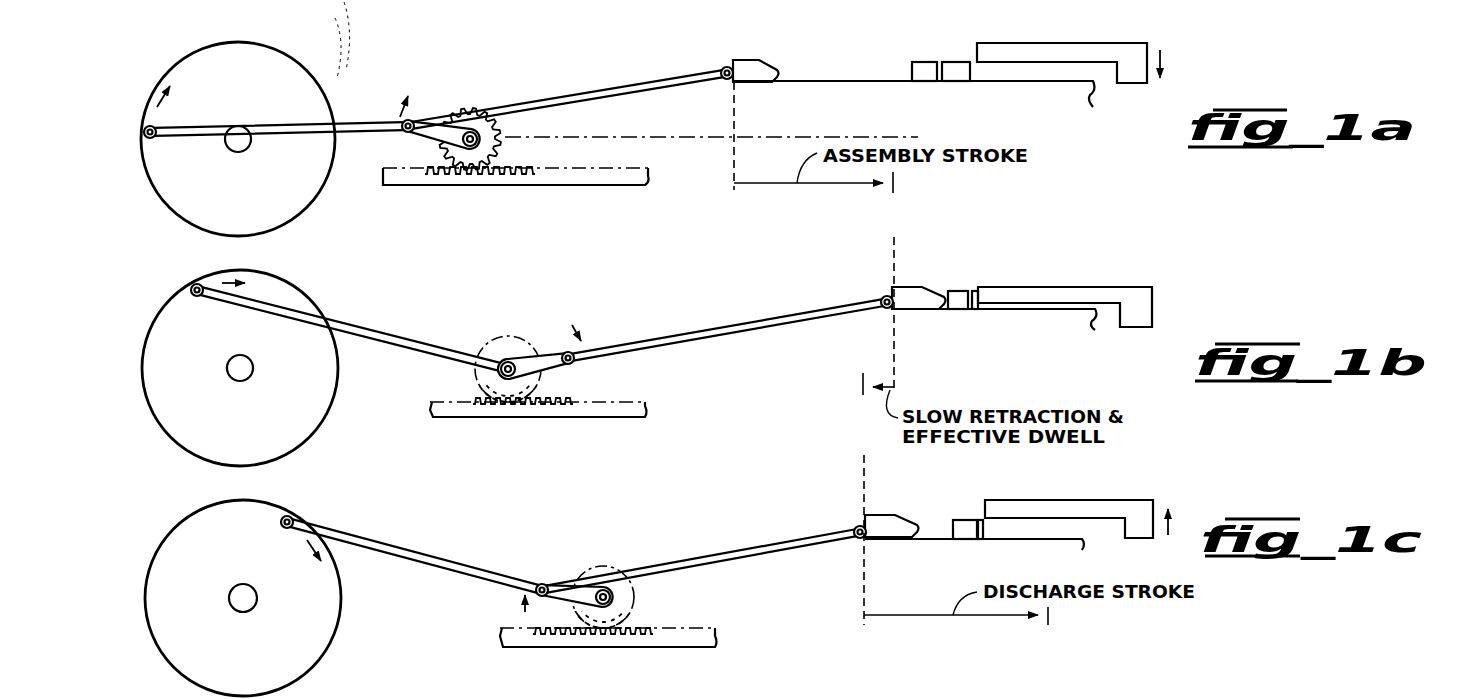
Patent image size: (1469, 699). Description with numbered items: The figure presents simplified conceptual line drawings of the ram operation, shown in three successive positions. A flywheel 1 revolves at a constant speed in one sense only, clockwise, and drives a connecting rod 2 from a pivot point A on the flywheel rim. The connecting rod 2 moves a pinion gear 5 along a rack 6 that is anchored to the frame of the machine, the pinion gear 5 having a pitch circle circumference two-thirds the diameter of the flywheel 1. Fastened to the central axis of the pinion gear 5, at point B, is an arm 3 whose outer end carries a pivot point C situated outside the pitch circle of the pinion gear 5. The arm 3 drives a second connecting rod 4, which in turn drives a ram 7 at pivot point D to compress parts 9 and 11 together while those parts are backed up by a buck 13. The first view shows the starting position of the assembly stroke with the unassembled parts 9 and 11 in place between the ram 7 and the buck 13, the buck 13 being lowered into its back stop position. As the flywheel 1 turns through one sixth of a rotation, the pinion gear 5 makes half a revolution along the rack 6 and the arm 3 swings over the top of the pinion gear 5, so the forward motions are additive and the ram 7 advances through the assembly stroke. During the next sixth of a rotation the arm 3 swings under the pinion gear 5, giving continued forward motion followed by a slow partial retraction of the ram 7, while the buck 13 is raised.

In FIG. 1A, the flywheel 1 is at (295, 72).
In FIG. 1B, the flywheel 1 is at (300, 302).
In FIG. 1C, the flywheel 1 is at (332, 610).
In FIG. 1A, the connecting rod 2 is at (278, 128).
In FIG. 1B, the connecting rod 2 is at (350, 326).
In FIG. 1C, the connecting rod 2 is at (400, 542).
In FIG. 1A, the arm 3 is at (445, 128).
In FIG. 1B, the arm 3 is at (548, 350).
In FIG. 1C, the arm 3 is at (568, 590).
In FIG. 1A, the second connecting rod 4 is at (565, 100).
In FIG. 1B, the second connecting rod 4 is at (712, 295).
In FIG. 1C, the second connecting rod 4 is at (715, 555).
In FIG. 1A, the pinion gear 5 is at (498, 148).
In FIG. 1B, the pinion gear 5 is at (480, 388).
In FIG. 1C, the pinion gear 5 is at (598, 620).
In FIG. 1A, the rack 6 is at (495, 177).
In FIG. 1B, the rack 6 is at (508, 408).
In FIG. 1C, the rack 6 is at (630, 637).
In FIG. 1A, the ram 7 is at (757, 58).
In FIG. 1B, the ram 7 is at (912, 287).
In FIG. 1C, the ram 7 is at (890, 515).
In FIG. 1A, the part 9 is at (925, 62).
In FIG. 1B, the part 9 is at (958, 291).
In FIG. 1C, the part 9 is at (960, 520).
In FIG. 1A, the part 11 is at (957, 62).
In FIG. 1B, the part 11 is at (975, 291).
In FIG. 1C, the part 11 is at (980, 520).
In FIG. 1A, the buck 13 is at (1040, 43).
In FIG. 1B, the buck 13 is at (1038, 290).
In FIG. 1C, the buck 13 is at (1040, 505).
In FIG. 1A, the pivot point A is at (150, 128).
In FIG. 1B, the pivot point A is at (194, 287).
In FIG. 1C, the pivot point A is at (295, 510).
In FIG. 1A, the pivot point B is at (505, 126).
In FIG. 1B, the pivot point B is at (505, 358).
In FIG. 1C, the pivot point B is at (618, 598).
In FIG. 1A, the pivot point C is at (404, 132).
In FIG. 1B, the pivot point C is at (575, 365).
In FIG. 1C, the pivot point C is at (540, 582).
In FIG. 1A, the pivot point D is at (724, 70).
In FIG. 1B, the pivot point D is at (880, 297).
In FIG. 1C, the pivot point D is at (855, 527).